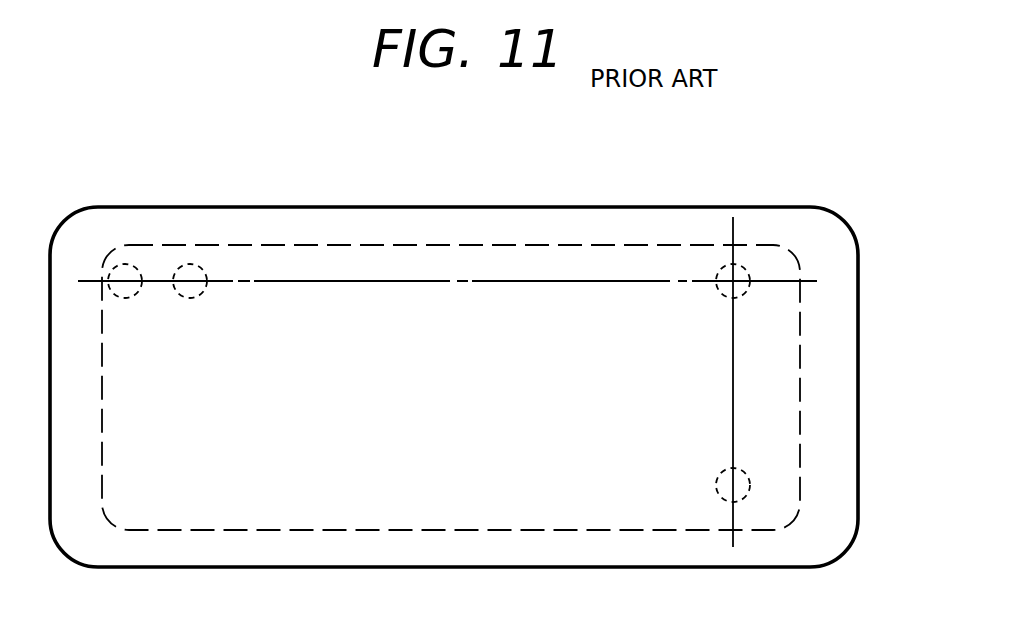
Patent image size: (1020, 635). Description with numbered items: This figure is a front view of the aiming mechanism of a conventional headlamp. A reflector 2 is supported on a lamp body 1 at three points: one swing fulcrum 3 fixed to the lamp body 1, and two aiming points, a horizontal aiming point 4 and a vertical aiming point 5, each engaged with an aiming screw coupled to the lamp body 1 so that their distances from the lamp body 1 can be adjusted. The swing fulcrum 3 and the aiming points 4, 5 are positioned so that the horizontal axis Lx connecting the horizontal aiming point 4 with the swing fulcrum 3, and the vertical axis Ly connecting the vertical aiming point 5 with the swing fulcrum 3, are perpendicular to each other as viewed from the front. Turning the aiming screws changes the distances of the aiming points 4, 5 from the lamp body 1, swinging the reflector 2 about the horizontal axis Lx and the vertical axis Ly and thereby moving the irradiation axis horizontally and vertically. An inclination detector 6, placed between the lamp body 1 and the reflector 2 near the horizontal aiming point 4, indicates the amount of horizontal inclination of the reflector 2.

The lamp body 1 is at (624, 208).
The reflector 2 is at (418, 245).
The swing fulcrum 3 is at (739, 265).
The horizontal aiming point 4 is at (127, 260).
The vertical aiming point 5 is at (737, 500).
The inclination detector 6 is at (194, 260).
The horizontal axis Lx is at (523, 281).
The vertical axis Ly is at (733, 350).